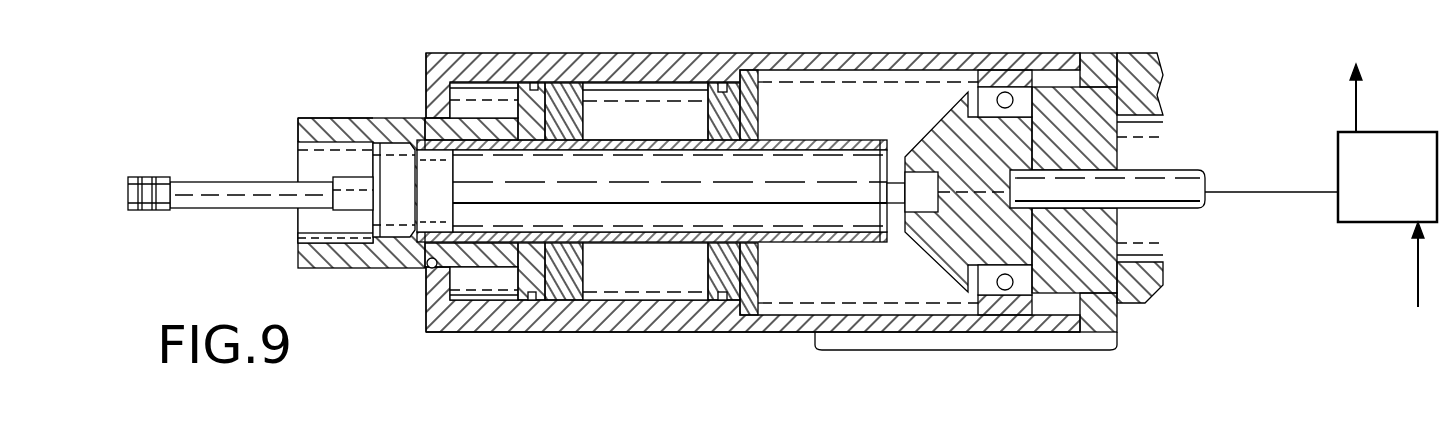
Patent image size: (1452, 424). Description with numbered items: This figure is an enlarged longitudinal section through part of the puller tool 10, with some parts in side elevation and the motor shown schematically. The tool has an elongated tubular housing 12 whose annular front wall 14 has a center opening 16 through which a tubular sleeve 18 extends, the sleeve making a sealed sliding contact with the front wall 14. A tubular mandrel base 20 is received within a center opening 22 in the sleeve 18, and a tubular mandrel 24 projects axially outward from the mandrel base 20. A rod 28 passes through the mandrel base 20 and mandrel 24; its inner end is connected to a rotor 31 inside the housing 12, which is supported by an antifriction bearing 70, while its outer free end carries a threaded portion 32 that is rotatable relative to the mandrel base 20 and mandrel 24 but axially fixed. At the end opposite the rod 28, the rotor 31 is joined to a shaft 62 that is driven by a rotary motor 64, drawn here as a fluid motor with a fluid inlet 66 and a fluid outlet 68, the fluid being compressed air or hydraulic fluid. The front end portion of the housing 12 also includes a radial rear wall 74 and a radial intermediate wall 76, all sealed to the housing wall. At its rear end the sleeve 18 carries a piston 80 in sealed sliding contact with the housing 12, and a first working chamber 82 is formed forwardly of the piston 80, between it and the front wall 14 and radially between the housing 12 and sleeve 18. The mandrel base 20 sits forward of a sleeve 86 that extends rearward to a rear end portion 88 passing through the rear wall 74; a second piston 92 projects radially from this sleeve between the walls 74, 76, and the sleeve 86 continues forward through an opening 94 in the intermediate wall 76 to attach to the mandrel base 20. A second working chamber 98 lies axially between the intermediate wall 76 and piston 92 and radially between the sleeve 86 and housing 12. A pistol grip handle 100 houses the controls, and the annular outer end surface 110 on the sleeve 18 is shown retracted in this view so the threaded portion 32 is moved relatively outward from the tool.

The puller tool 10 is at (494, 358).
The tubular housing 12 is at (665, 67).
The annular front wall 14 is at (430, 88).
The center opening 16 is at (427, 263).
The tubular sleeve 18 is at (378, 262).
The tubular mandrel base 20 is at (388, 157).
The center opening 22 is at (310, 233).
The tubular mandrel 24 is at (333, 180).
The rod 28 is at (820, 187).
The rotor 31 is at (950, 113).
The threaded portion 32 is at (145, 210).
The shaft 62 is at (1188, 203).
The rotary motor 64 is at (1367, 207).
The fluid inlet 66 is at (1418, 283).
The fluid outlet 68 is at (1356, 93).
The antifriction bearing 70 is at (1017, 103).
The radial rear wall 74 is at (778, 90).
The radial intermediate wall 76 is at (567, 90).
The piston 80 is at (512, 83).
The first working chamber 82 is at (463, 90).
The sleeve 86 is at (605, 243).
The rear end portion 88 is at (852, 242).
The second piston 92 is at (715, 270).
The opening 94 is at (582, 132).
The second working chamber 98 is at (695, 93).
The pistol grip handle 100 is at (997, 345).
The annular outer end surface 110 is at (300, 123).